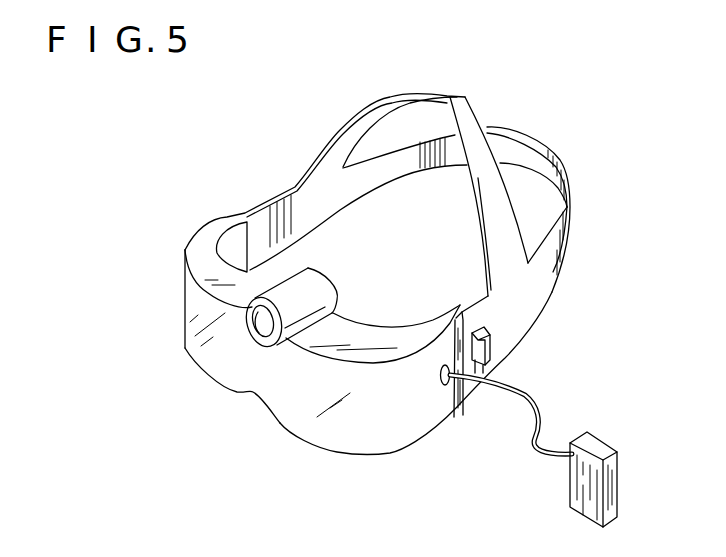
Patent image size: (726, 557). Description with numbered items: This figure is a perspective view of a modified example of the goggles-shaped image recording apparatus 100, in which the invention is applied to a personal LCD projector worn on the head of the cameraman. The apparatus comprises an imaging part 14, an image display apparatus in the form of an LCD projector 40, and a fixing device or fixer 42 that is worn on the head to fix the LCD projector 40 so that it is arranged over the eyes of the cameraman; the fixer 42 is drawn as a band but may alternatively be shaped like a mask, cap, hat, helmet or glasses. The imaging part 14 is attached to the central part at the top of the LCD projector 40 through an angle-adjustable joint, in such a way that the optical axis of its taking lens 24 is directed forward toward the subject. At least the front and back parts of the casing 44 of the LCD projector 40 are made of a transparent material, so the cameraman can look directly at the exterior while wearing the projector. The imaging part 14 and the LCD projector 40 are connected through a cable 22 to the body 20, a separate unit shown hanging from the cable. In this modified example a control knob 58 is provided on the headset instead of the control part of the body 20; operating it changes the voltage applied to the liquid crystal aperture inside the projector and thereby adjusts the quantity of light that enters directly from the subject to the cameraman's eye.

The image recording apparatus 100 is at (284, 137).
The fixer 42 is at (565, 250).
The imaging part 14 is at (320, 287).
The taking lens 24 is at (256, 330).
The casing 44 is at (281, 397).
The LCD projector 40 is at (408, 419).
The control knob 58 is at (490, 347).
The cable 22 is at (527, 386).
The body 20 is at (612, 497).